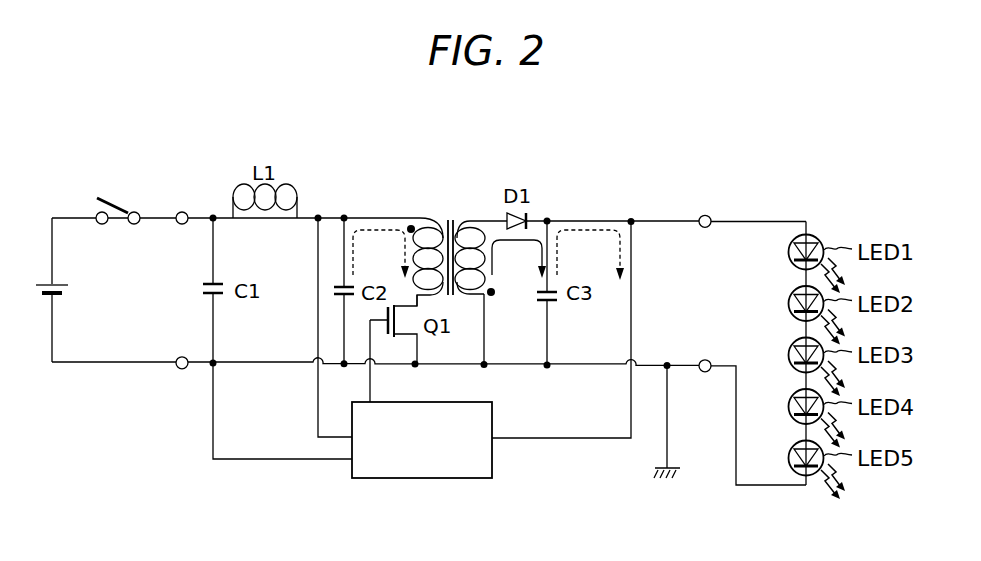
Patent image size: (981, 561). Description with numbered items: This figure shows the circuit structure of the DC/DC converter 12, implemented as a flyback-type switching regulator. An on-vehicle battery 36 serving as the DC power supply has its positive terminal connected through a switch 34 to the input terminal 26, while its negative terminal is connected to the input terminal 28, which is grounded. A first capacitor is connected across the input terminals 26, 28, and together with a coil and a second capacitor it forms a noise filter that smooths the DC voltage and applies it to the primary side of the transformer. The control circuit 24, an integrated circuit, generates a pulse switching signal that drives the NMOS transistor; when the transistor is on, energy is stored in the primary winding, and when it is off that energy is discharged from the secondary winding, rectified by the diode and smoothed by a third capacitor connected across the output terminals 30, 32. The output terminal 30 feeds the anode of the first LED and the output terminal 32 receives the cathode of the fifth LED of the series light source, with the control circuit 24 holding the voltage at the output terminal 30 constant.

The DC/DC converter 12 is at (420, 209).
The control circuit 24 is at (492, 462).
The input terminal 26 is at (182, 212).
The input terminal 28 is at (182, 369).
The output terminal 30 is at (705, 215).
The output terminal 32 is at (705, 372).
The switch 34 is at (114, 199).
The on-vehicle battery 36 is at (70, 289).